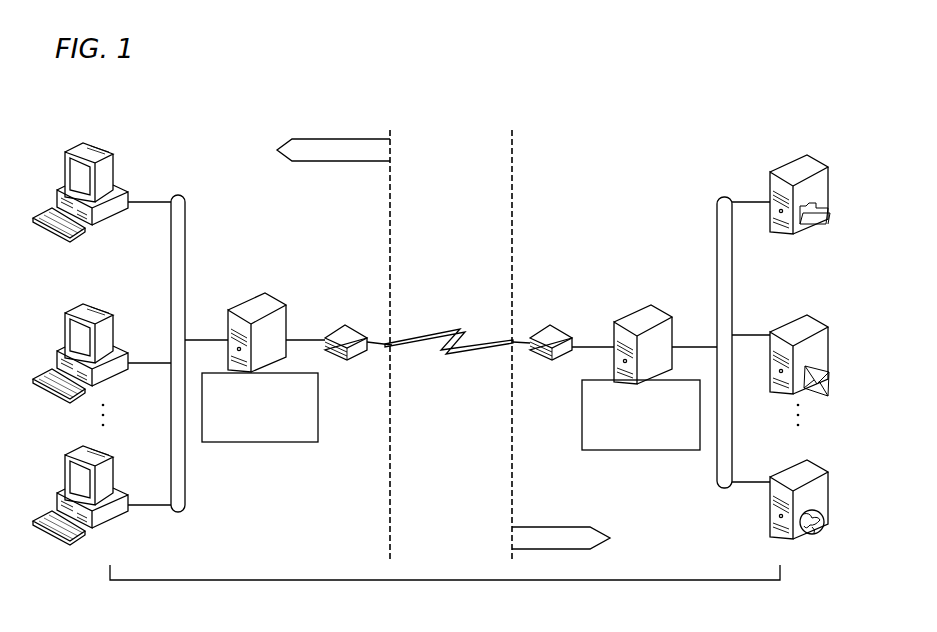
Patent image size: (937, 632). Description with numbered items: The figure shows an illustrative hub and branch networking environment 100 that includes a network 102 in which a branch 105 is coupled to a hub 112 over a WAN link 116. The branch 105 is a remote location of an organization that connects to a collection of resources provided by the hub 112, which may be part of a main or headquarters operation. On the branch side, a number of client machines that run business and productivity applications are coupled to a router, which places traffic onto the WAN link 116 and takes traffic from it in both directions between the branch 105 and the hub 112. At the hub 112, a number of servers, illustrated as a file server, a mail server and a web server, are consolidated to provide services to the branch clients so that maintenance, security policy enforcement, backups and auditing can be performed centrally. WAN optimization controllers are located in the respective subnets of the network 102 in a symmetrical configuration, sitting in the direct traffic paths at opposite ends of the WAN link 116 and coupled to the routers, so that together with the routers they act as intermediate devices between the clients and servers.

The hub and branch networking environment 100 is at (467, 89).
The network 102 is at (440, 580).
The branch 105 is at (338, 140).
The hub 112 is at (563, 527).
The WAN link 116 is at (449, 330).